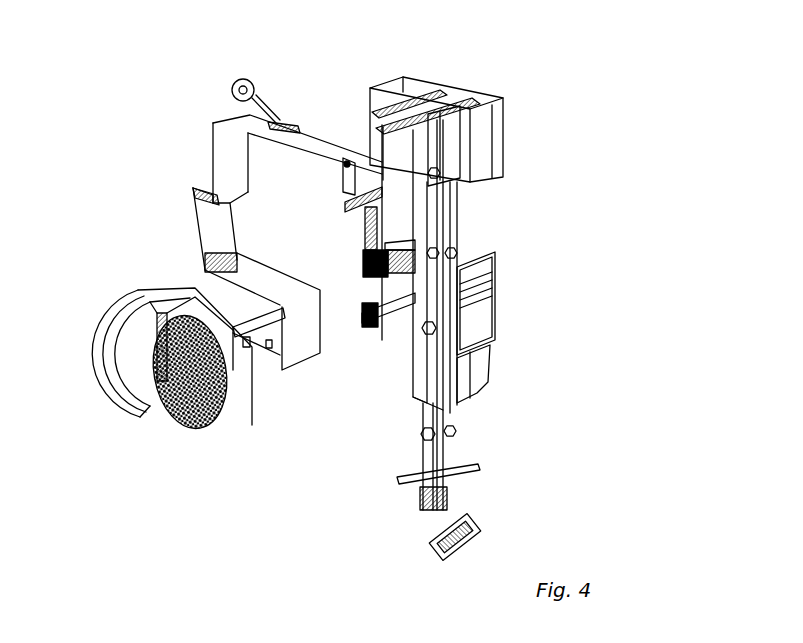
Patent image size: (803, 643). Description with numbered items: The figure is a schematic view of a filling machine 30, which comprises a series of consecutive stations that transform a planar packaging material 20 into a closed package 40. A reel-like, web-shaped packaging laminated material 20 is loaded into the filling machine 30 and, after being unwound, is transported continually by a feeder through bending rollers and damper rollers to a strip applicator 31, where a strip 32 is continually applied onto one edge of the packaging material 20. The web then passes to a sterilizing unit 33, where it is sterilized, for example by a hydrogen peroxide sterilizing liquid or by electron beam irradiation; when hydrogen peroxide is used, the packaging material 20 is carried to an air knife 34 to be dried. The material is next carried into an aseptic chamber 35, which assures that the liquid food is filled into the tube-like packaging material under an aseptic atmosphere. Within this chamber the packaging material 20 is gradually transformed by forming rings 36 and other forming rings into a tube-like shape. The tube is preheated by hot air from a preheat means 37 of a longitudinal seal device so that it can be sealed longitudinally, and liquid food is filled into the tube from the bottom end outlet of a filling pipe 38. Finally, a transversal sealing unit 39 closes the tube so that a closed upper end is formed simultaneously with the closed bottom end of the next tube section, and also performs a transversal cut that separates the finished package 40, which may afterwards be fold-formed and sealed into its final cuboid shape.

The packaging material 20 is at (162, 423).
The filling machine 30 is at (490, 306).
The strip applicator 31 is at (290, 122).
The strip 32 is at (265, 106).
The sterilizing unit 33 is at (368, 327).
The air knife 34 is at (497, 199).
The aseptic chamber 35 is at (430, 110).
The forming rings 36 is at (458, 248).
The preheat means 37 is at (455, 370).
The filling pipe 38 is at (483, 302).
The transversal sealing unit 39 is at (473, 472).
The package 40 is at (436, 541).